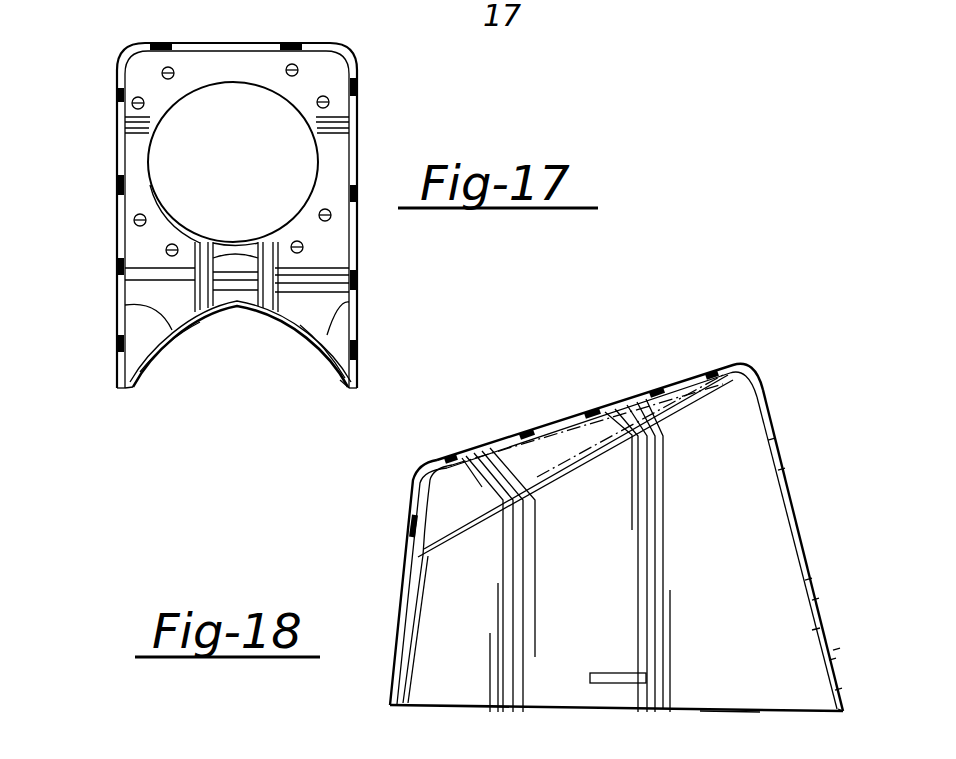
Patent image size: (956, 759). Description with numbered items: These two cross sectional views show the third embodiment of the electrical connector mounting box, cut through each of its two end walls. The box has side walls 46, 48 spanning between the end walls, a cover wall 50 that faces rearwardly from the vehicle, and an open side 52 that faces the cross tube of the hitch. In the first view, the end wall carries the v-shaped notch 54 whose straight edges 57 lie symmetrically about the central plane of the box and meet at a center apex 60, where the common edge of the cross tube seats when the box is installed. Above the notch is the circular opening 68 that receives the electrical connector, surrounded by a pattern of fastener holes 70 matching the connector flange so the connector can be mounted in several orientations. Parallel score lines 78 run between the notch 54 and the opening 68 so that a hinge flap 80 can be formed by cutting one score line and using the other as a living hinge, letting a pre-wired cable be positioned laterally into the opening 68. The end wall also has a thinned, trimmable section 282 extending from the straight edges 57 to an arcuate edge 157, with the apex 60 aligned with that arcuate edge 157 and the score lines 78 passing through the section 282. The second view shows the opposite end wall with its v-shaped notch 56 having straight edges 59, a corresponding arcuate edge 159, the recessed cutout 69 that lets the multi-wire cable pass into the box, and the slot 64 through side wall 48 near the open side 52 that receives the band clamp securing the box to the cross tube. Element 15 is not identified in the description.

In FIG. 17, the skirt cutout edge 15 is at (353, 315).
In FIG. 17, the side wall 46 is at (357, 117).
In FIG. 18, the side wall 46 is at (730, 690).
In FIG. 17, the side wall 48 is at (117, 157).
In FIG. 17, the cover wall 50 is at (236, 43).
In FIG. 18, the cover wall 50 is at (607, 400).
In FIG. 18, the open side 52 is at (687, 710).
In FIG. 17, the notch 54 is at (334, 388).
In FIG. 18, the notch 54 is at (845, 712).
In FIG. 18, the notch 56 is at (390, 705).
In FIG. 17, the straight edges 57 is at (153, 377).
In FIG. 18, the straight edges 57 is at (833, 650).
In FIG. 18, the straight edges 59 is at (400, 657).
In FIG. 17, the center apex 60 is at (243, 310).
In FIG. 18, the slot 64 is at (622, 672).
In FIG. 17, the circular opening 68 is at (250, 103).
In FIG. 18, the circular opening 68 is at (772, 477).
In FIG. 18, the recessed cutout 69 is at (405, 590).
In FIG. 17, the fastener holes 70 is at (330, 97).
In FIG. 17, the score lines 78 is at (252, 247).
In FIG. 17, the hinge flap 80 is at (275, 265).
In FIG. 17, the arcuate edge 157 is at (125, 305).
In FIG. 18, the arcuate edge 157 is at (810, 633).
In FIG. 18, the arcuate edge 159 is at (410, 662).
In FIG. 17, the trimmable section 282 is at (172, 343).